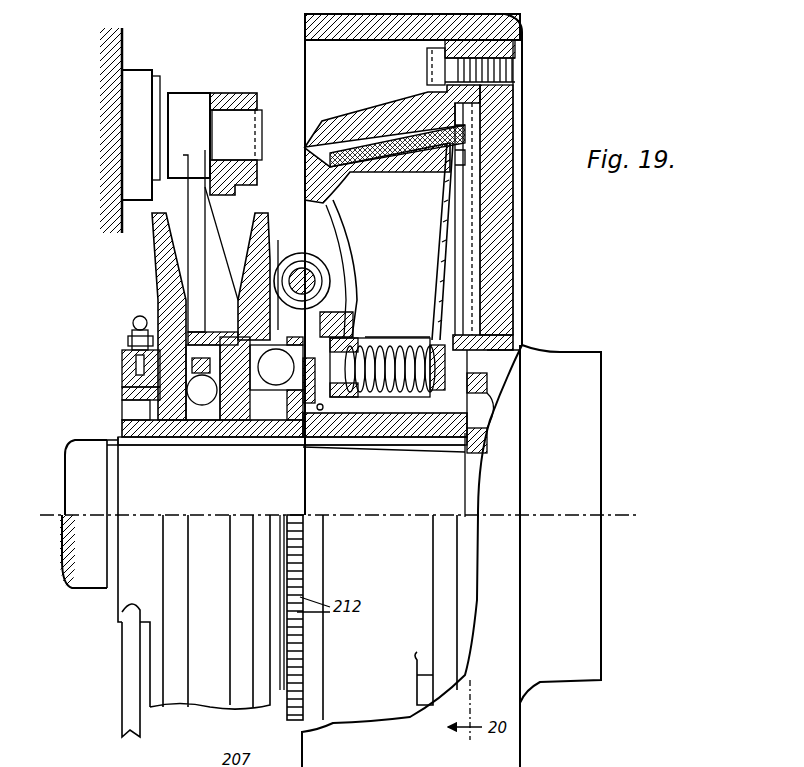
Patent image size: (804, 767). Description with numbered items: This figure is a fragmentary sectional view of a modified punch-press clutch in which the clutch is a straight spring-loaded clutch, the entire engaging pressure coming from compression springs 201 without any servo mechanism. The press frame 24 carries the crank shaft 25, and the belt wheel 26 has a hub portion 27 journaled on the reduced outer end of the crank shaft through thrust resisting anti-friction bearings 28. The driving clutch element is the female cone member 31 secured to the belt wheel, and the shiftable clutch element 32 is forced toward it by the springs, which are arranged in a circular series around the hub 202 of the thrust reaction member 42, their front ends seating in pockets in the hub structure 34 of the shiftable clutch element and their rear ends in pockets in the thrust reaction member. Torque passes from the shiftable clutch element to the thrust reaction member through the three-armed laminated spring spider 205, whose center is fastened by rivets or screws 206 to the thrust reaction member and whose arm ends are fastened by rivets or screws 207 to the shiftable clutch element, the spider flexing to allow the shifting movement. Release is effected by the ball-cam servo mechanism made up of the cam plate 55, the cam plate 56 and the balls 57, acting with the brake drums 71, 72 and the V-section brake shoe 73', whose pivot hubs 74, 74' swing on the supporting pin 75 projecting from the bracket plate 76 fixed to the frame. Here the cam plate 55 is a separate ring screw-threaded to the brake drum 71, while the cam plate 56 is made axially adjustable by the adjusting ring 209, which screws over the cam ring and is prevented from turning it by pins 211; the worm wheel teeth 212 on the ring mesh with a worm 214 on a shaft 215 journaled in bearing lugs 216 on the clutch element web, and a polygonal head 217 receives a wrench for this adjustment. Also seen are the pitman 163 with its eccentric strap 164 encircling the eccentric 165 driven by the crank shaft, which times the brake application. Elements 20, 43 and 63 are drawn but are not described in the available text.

The pin / direction arrow 20 is at (478, 108).
The press frame 24 is at (125, 37).
The crank shaft 25 is at (68, 478).
The belt wheel 26 is at (523, 30).
The hub portion 27 is at (599, 356).
The anti-friction bearings 28 is at (493, 404).
The female cone member 31 is at (375, 118).
The shiftable clutch element 32 is at (314, 204).
The hub structure 34 is at (372, 312).
The thrust reaction member 42 is at (456, 338).
The sleeve 43 is at (442, 450).
The cam plate 55 is at (250, 438).
The cam plate 56 is at (289, 438).
The balls 57 is at (266, 438).
The plate 63 is at (173, 445).
The brake drum 71 is at (278, 240).
The brake drum 72 is at (156, 235).
The brake shoe 73' is at (229, 266).
The pivot hub 74 is at (233, 129).
The pivot hub 74' is at (189, 198).
The supporting pin 75 is at (252, 126).
The bracket plate 76 is at (143, 77).
The pitman 163 is at (130, 689).
The eccentric strap 164 is at (122, 372).
The eccentric 165 is at (122, 393).
The compression springs 201 is at (382, 346).
The hub 202 is at (391, 438).
The spring spider 205 is at (448, 236).
The rivets or screws 206 is at (482, 365).
The rivets or screws 207 is at (466, 162).
The adjusting ring 209 is at (355, 322).
The pins 211 is at (355, 336).
The worm wheel teeth 212 is at (355, 302).
The worm 214 is at (328, 258).
The shaft 215 is at (344, 263).
The bearing lugs 216 is at (350, 283).
The polygonal head 217 is at (293, 262).